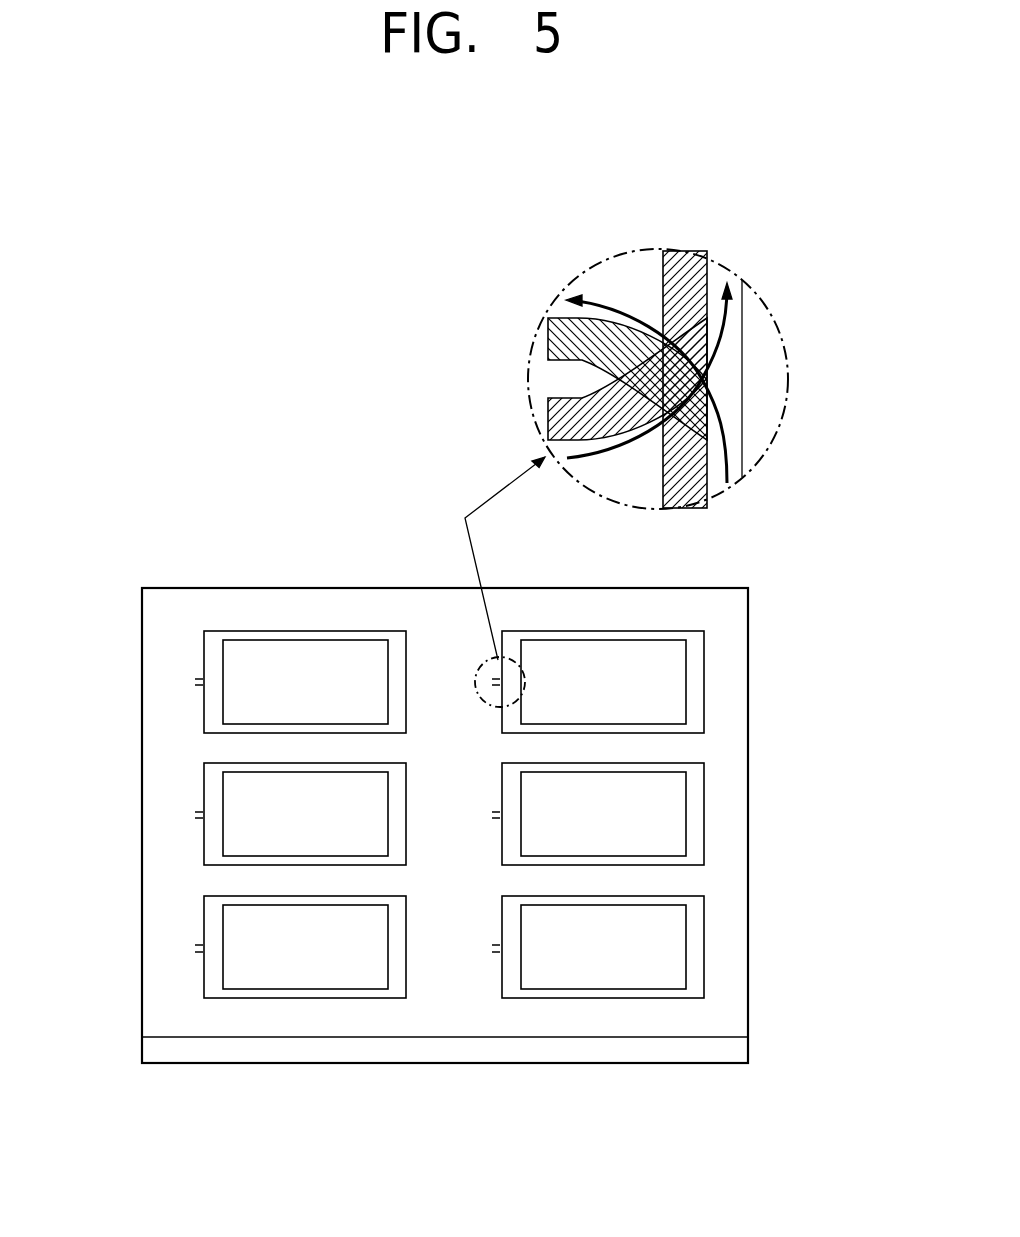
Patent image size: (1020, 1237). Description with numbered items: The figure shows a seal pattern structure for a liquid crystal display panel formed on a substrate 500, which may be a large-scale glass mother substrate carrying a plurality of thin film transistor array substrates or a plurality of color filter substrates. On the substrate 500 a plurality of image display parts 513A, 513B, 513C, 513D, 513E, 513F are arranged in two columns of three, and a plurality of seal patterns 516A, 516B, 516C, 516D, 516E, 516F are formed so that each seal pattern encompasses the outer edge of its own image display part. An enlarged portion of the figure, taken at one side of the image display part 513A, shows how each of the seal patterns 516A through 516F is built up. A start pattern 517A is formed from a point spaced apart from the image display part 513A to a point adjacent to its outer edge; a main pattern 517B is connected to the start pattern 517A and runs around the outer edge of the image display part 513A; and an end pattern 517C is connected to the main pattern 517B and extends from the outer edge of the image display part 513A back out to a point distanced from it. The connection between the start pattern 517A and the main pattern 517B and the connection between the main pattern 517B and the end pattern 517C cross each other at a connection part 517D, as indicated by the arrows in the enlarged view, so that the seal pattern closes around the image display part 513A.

The substrate 500 is at (730, 1054).
The image display part 513A is at (628, 695).
The image display part 513B is at (628, 828).
The image display part 513C is at (628, 960).
The image display part 513D is at (341, 695).
The image display part 513E is at (341, 828).
The image display part 513F is at (341, 960).
The seal pattern 516A is at (705, 682).
The seal pattern 516B is at (705, 810).
The seal pattern 516C is at (705, 940).
The seal pattern 516D is at (203, 657).
The seal pattern 516E is at (203, 790).
The seal pattern 516F is at (203, 920).
The start pattern 517A is at (549, 425).
The main pattern 517B is at (688, 252).
The end pattern 517C is at (549, 340).
The connection part 517D is at (694, 350).